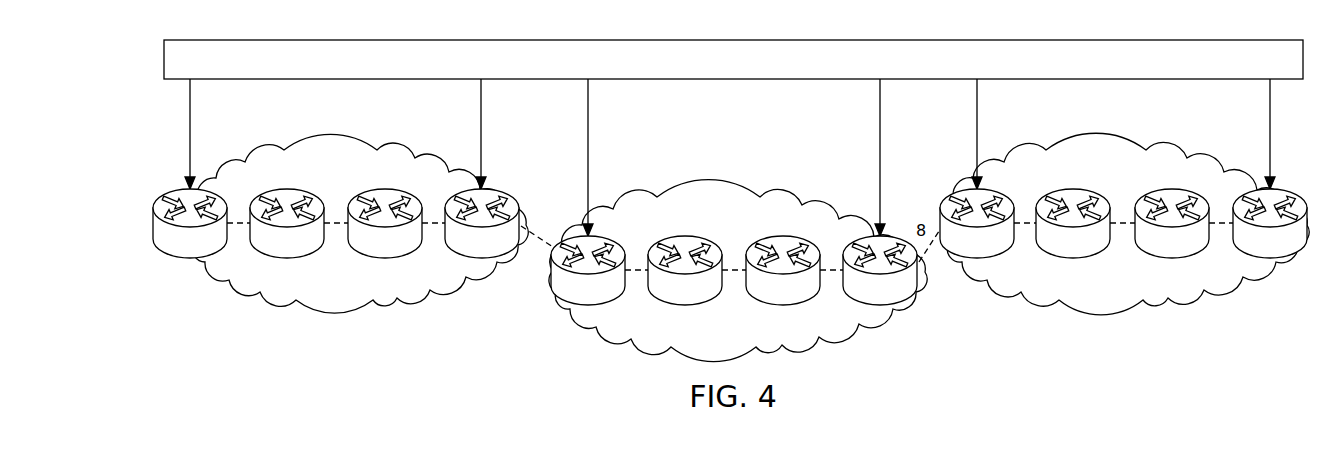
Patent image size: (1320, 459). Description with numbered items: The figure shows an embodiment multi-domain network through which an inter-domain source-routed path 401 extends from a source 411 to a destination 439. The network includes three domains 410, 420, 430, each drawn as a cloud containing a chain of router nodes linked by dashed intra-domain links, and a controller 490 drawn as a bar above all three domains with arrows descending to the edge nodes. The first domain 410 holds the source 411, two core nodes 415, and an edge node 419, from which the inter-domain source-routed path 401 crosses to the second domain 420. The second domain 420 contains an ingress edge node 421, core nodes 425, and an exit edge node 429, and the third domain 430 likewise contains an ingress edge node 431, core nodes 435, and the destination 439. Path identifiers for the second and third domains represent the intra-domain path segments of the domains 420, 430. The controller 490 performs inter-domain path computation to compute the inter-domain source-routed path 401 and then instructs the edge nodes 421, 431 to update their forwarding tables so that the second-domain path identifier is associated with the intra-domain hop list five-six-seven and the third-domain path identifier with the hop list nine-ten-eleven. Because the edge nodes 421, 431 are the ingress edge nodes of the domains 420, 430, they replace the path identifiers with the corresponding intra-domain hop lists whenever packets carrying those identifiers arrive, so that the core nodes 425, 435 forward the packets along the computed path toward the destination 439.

The controller 490 is at (733, 40).
The domain 410 is at (338, 219).
The domain 420 is at (737, 261).
The domain 430 is at (1124, 227).
The source 411 is at (183, 262).
The core nodes 415 is at (282, 262).
The edge node 419 is at (497, 190).
The inter-domain source-routed path 401 is at (543, 257).
The edge node 421 is at (576, 308).
The core nodes 425 is at (662, 308).
The edge node 429 is at (893, 308).
The edge node 431 is at (968, 262).
The core nodes 435 is at (1070, 262).
The destination 439 is at (1282, 190).